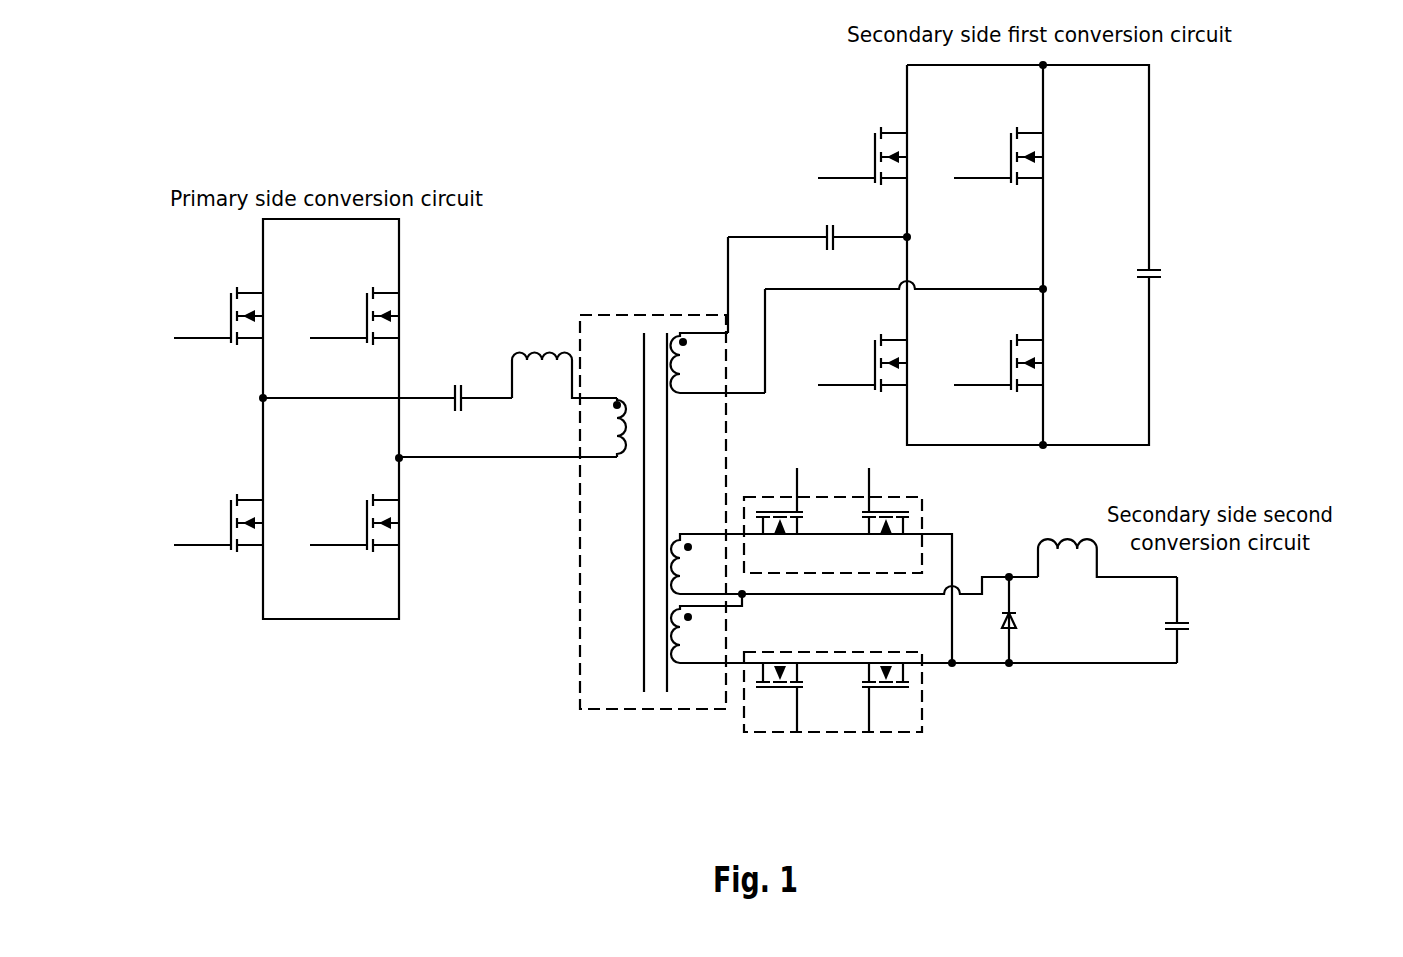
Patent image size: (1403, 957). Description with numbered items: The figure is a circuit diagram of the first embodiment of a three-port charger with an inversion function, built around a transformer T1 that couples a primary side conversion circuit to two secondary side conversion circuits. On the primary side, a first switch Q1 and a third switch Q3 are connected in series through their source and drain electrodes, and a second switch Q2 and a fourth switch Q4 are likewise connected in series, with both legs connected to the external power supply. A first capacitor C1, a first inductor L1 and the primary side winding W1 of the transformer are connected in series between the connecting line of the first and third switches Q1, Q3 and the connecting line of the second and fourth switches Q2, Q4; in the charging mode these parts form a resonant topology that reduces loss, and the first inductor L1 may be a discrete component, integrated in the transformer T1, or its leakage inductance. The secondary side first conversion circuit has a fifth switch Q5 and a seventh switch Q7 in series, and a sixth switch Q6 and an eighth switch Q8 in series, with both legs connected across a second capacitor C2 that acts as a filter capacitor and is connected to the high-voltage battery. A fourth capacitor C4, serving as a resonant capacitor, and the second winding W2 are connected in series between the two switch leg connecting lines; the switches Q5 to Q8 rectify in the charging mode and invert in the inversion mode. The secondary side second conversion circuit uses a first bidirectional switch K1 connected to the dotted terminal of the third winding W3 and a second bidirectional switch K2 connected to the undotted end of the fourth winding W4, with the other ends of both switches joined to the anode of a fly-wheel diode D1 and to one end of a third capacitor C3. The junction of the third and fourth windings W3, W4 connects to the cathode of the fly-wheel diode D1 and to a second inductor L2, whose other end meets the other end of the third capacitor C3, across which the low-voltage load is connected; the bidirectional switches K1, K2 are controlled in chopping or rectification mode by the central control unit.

The first switch Q1 is at (218, 286).
The second switch Q2 is at (354, 286).
The third switch Q3 is at (218, 493).
The fourth switch Q4 is at (354, 493).
The first capacitor C1 is at (458, 384).
The first inductor L1 is at (564, 361).
The transformer T1 is at (653, 512).
The primary side winding W1 is at (604, 427).
The second winding W2 is at (718, 363).
The third winding W3 is at (854, 566).
The fourth winding W4 is at (717, 628).
The fifth switch Q5 is at (862, 140).
The sixth switch Q6 is at (998, 140).
The seventh switch Q7 is at (862, 348).
The eighth switch Q8 is at (998, 348).
The fourth capacitor C4 is at (817, 222).
The second capacitor C2 is at (1167, 273).
The first bidirectional switch K1 is at (848, 565).
The second bidirectional switch K2 is at (960, 706).
The fly-wheel diode D1 is at (1026, 620).
The second inductor L2 is at (1107, 544).
The third capacitor C3 is at (1193, 620).